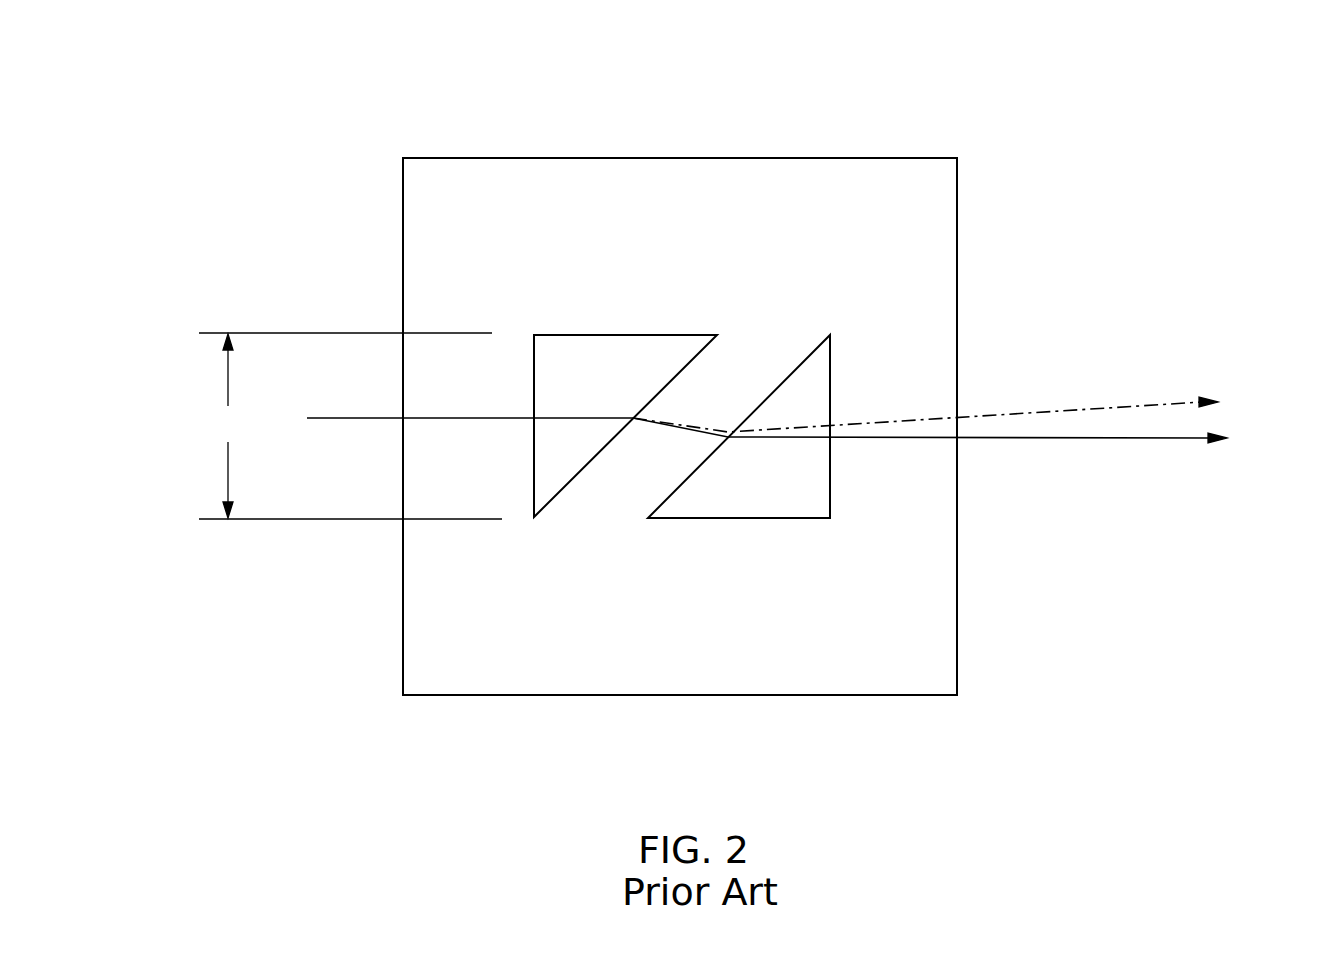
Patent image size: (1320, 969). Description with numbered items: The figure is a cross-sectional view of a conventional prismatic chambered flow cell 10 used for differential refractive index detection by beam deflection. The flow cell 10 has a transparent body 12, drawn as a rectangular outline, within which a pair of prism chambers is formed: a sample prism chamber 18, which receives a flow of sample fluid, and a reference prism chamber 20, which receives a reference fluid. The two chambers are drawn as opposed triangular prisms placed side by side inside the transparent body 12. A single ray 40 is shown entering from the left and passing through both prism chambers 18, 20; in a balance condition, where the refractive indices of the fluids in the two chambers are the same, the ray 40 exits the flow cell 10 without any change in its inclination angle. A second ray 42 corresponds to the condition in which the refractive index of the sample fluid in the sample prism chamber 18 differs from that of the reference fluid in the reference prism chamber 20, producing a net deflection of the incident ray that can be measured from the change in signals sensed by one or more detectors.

The conventional prismatic chambered flow cell 10 is at (764, 56).
The transparent body 12 is at (506, 173).
The sample prism chamber 18 is at (599, 394).
The reference prism chamber 20 is at (777, 504).
The ray 40 is at (790, 436).
The second ray 42 is at (951, 409).